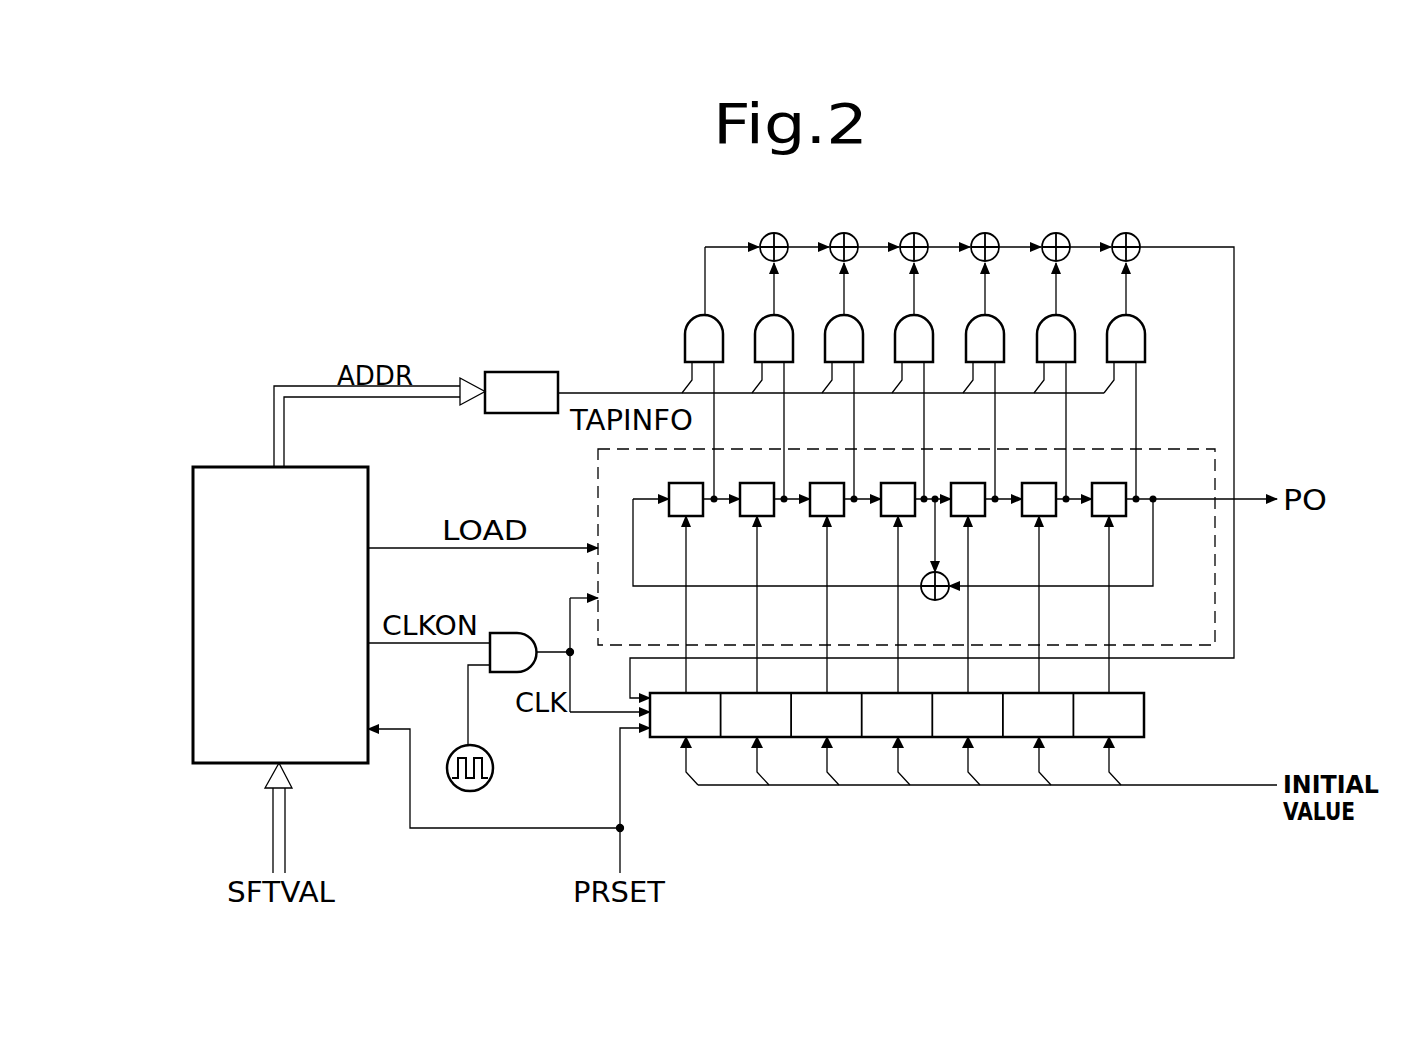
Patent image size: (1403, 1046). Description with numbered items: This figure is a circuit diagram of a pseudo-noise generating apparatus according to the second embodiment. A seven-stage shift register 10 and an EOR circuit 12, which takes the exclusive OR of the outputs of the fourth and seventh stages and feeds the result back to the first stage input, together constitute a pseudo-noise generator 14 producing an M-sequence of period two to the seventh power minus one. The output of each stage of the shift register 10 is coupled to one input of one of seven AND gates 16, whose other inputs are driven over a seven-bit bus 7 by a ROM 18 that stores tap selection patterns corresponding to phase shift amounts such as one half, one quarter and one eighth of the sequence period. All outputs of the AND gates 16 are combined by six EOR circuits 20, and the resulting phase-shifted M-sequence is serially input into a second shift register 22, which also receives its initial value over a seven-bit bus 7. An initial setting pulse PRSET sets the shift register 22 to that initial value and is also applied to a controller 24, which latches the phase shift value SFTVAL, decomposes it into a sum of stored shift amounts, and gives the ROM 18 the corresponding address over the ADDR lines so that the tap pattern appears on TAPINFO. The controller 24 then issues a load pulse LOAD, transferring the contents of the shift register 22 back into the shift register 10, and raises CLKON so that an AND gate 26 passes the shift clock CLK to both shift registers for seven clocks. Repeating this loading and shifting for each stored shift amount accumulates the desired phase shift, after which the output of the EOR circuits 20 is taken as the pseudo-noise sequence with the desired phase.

The 7-bit bus 7 is at (598, 402).
The shift register 10 is at (1149, 493).
The EOR circuit 12 is at (932, 600).
The pseudo-noise generator 14 is at (1185, 646).
The AND gates 16 is at (1150, 324).
The ROM 18 is at (531, 372).
The EOR circuits 20 is at (1141, 233).
The shift register 22 is at (1145, 702).
The controller 24 is at (232, 467).
The AND gate 26 is at (522, 633).